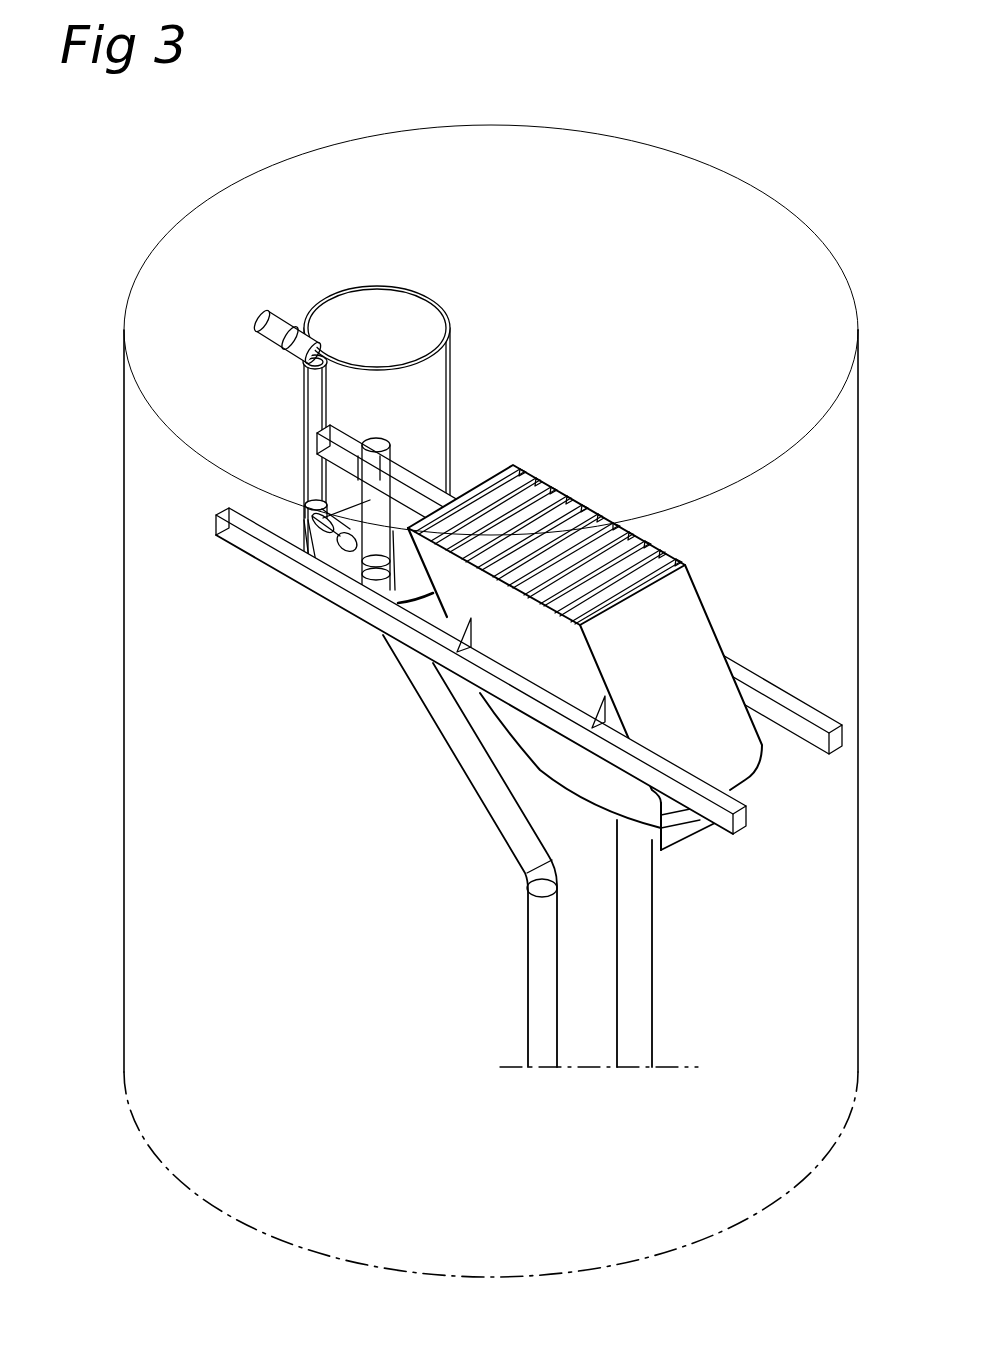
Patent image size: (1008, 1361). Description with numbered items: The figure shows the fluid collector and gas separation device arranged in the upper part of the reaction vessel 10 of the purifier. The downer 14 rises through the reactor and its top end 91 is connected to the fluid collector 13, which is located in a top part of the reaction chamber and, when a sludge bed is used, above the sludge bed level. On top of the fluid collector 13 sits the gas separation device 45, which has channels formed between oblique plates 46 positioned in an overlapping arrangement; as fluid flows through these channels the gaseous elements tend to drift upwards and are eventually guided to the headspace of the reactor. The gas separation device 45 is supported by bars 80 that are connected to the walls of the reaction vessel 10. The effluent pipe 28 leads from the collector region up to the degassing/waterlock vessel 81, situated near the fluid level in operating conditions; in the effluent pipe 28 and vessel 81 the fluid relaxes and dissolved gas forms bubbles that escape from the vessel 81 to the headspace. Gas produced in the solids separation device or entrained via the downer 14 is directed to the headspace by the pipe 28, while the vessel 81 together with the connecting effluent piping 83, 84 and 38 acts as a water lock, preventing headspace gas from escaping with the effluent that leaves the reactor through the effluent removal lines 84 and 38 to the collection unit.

The reaction vessel 10 is at (147, 535).
The fluid collector 13 is at (675, 830).
The downer 14 is at (642, 998).
The effluent pipe 28 is at (538, 958).
The effluent removal line 38 is at (273, 320).
The gas separation device 45 is at (600, 651).
The oblique plates 46 is at (625, 555).
The bars 80 is at (579, 589).
The degassing/waterlock vessel 81 is at (427, 378).
The connecting effluent piping 83 is at (408, 528).
The effluent removal line 84 is at (340, 530).
The top end of the downer 91 is at (640, 852).